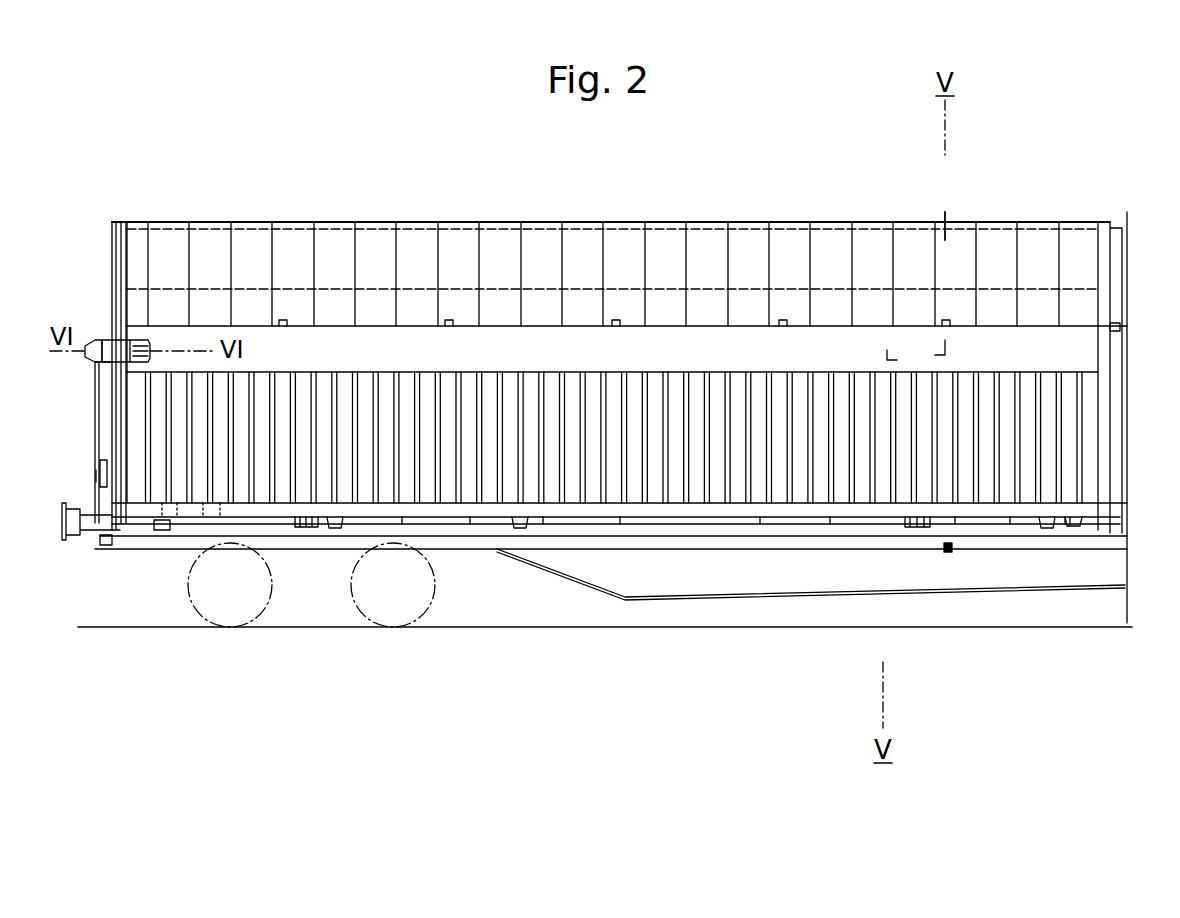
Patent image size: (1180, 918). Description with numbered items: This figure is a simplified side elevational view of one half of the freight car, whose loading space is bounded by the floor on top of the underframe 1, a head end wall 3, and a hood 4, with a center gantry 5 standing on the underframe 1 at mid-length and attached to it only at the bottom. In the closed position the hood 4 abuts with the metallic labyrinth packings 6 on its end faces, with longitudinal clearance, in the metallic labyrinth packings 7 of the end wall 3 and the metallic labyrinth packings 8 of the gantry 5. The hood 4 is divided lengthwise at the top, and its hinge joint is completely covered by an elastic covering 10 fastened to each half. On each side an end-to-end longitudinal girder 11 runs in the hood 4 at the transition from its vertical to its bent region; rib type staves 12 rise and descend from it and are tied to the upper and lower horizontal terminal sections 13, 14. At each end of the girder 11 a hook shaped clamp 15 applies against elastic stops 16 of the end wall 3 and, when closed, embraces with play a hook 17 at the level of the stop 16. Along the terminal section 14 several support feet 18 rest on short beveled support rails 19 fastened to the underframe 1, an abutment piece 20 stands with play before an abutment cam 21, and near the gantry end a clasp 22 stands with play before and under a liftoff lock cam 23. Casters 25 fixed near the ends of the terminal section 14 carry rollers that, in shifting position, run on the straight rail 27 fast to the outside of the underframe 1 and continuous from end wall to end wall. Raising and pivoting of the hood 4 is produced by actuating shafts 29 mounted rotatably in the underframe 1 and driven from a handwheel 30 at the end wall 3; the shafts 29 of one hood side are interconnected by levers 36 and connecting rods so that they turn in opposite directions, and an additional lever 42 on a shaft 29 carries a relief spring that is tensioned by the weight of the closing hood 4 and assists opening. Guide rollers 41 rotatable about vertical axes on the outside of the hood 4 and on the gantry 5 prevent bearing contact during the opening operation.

The underframe 1 is at (657, 578).
The head end wall 3 is at (107, 390).
The hood 4 is at (372, 275).
The gantry 5 is at (1115, 232).
The metallic labyrinth packing 6 is at (118, 349).
The metallic labyrinth packing 7 is at (122, 255).
The metallic labyrinth packing 8 is at (1105, 250).
The elastic covering 10 is at (597, 228).
The longitudinal girder 11 is at (505, 357).
The rib type stave 12 is at (500, 437).
The horizontal terminal section 13 is at (745, 225).
The horizontal terminal section 14 is at (803, 506).
The hook shaped clamp 15 is at (123, 356).
The elastic stop 16 is at (92, 250).
The hook 17 is at (100, 340).
The support foot 18 is at (693, 614).
The support rail 19 is at (1047, 530).
The abutment piece 20 is at (202, 522).
The abutment cam 21 is at (163, 530).
The clasp 22 is at (1104, 614).
The liftoff lock cam 23 is at (1080, 528).
The caster 25 is at (912, 530).
The rail 27 is at (737, 553).
The actuating shaft 29 is at (112, 543).
The handwheel 30 is at (97, 483).
The lever 36 is at (949, 627).
The guide roller 41 is at (1120, 327).
The additional lever 42 is at (948, 553).